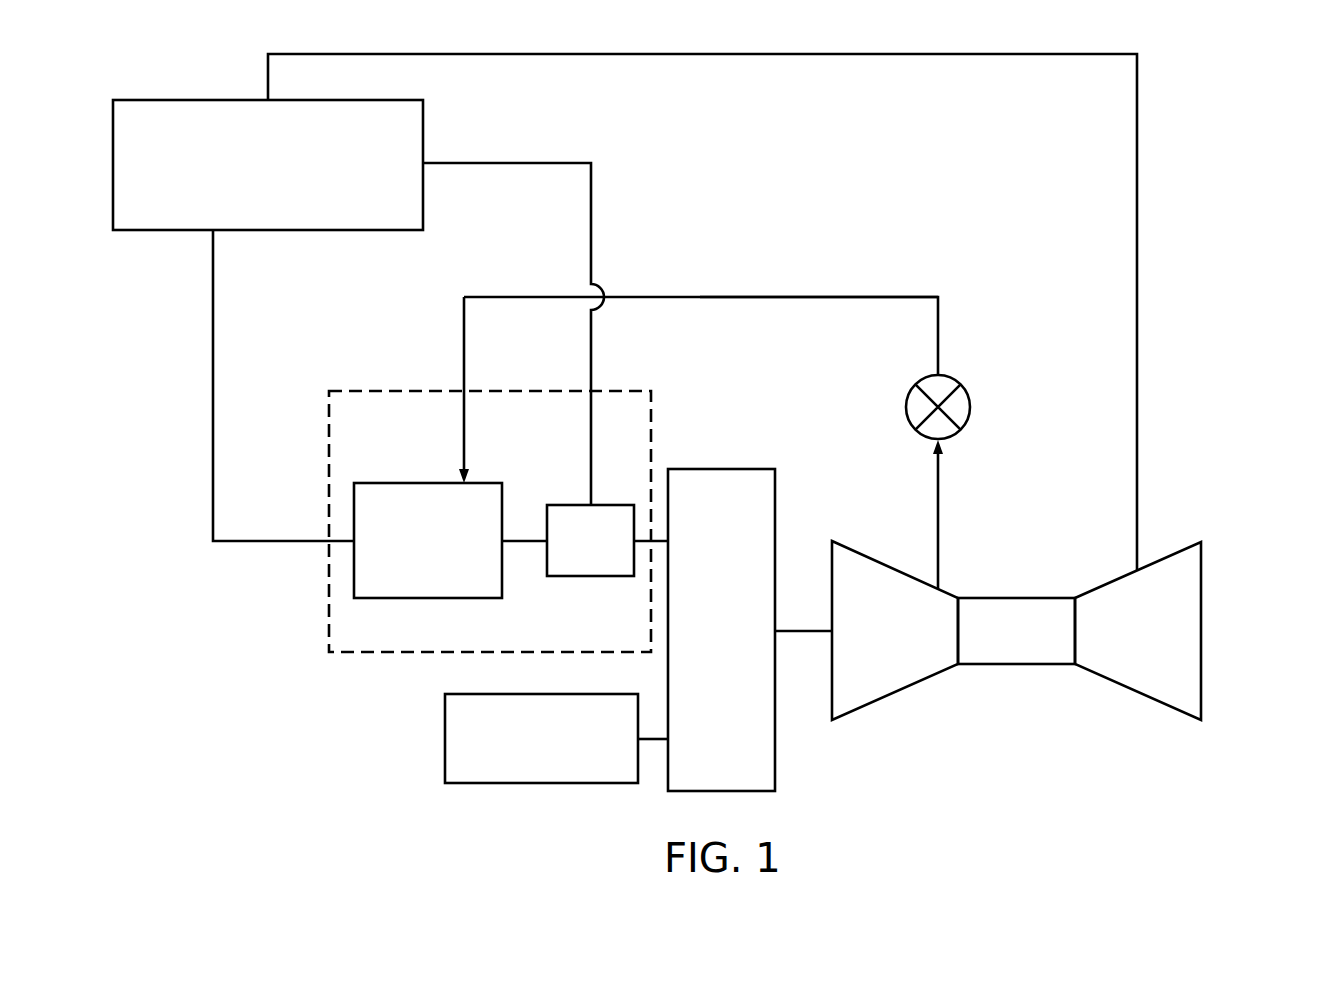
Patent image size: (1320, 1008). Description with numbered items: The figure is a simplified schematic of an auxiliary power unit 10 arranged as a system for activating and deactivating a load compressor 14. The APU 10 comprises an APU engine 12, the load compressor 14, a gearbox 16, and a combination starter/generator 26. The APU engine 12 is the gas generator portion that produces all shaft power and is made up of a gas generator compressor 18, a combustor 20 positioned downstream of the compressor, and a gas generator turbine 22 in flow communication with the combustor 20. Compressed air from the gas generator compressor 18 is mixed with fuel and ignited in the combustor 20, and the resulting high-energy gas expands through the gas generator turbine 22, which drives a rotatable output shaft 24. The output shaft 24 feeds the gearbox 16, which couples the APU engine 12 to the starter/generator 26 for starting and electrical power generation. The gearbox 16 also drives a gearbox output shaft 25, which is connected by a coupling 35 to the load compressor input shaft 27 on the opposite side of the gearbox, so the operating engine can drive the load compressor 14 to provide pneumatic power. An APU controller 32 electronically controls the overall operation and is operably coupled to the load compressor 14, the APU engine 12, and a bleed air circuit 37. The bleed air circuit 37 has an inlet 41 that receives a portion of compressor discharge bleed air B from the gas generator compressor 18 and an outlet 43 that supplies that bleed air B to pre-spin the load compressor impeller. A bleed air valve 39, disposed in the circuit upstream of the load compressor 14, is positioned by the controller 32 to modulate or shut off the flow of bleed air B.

The auxiliary power unit 10 is at (1236, 131).
The APU engine 12 is at (1053, 612).
The load compressor 14 is at (354, 510).
The gearbox 16 is at (777, 745).
The gas generator compressor 18 is at (898, 690).
The combustor 20 is at (1058, 665).
The gas generator turbine 22 is at (1203, 581).
The rotatable output shaft 24 is at (800, 631).
The gearbox output shaft 25 is at (660, 540).
The combination starter/generator 26 is at (445, 718).
The load compressor input shaft 27 is at (520, 541).
The APU controller 32 is at (423, 129).
The coupling 35 is at (561, 505).
The bleed air circuit 37 is at (936, 276).
The bleed air valve 39 is at (970, 405).
The bleed air circuit inlet 41 is at (940, 589).
The bleed air circuit outlet 43 is at (463, 482).
The compressor discharge bleed air B is at (795, 297).